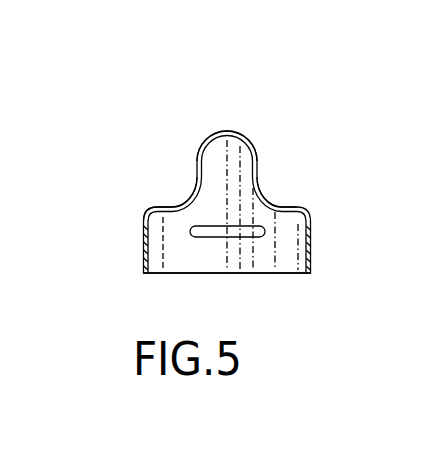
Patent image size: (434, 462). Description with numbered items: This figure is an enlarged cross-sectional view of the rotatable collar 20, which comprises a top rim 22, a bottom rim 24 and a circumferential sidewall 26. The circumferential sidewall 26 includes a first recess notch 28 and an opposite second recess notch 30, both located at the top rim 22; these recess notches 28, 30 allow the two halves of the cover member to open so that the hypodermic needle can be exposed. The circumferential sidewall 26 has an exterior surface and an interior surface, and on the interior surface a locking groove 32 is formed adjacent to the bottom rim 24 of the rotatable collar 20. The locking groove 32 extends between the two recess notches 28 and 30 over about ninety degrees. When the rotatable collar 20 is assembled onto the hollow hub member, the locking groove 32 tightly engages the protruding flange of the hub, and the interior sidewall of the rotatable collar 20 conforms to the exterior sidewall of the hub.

The rotatable collar 20 is at (240, 93).
The top rim 22 is at (227, 130).
The bottom rim 24 is at (172, 273).
The circumferential sidewall 26 is at (173, 233).
The first recess notch 28 is at (280, 208).
The second recess notch 30 is at (173, 203).
The locking groove 32 is at (229, 233).